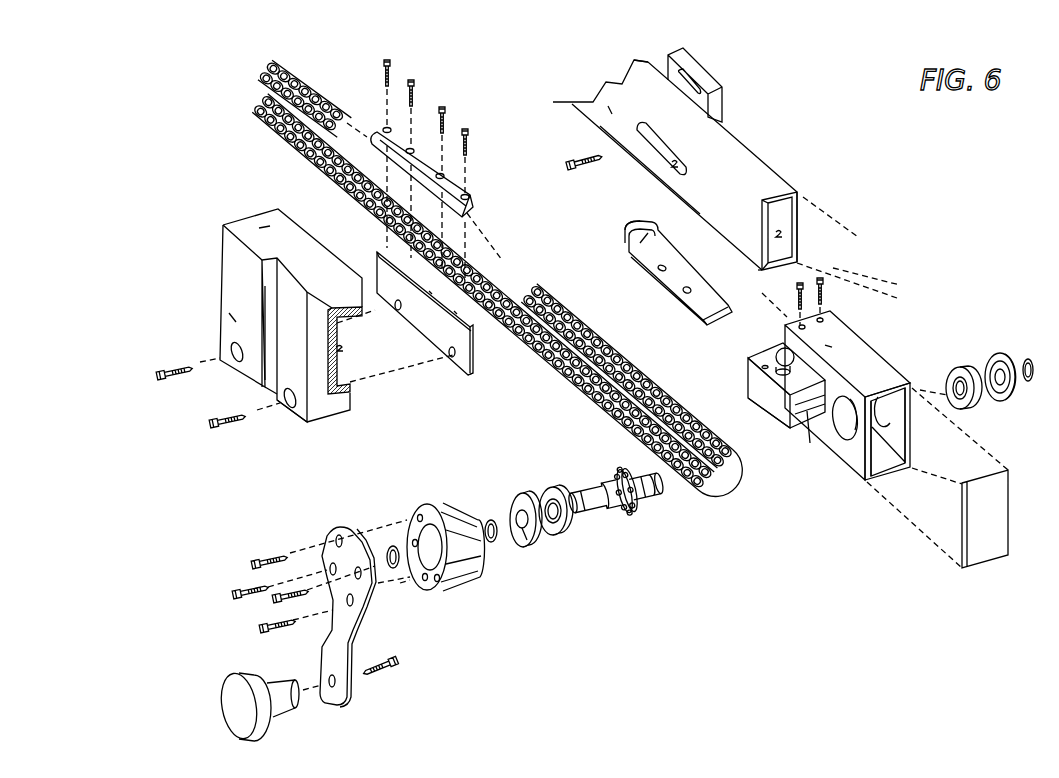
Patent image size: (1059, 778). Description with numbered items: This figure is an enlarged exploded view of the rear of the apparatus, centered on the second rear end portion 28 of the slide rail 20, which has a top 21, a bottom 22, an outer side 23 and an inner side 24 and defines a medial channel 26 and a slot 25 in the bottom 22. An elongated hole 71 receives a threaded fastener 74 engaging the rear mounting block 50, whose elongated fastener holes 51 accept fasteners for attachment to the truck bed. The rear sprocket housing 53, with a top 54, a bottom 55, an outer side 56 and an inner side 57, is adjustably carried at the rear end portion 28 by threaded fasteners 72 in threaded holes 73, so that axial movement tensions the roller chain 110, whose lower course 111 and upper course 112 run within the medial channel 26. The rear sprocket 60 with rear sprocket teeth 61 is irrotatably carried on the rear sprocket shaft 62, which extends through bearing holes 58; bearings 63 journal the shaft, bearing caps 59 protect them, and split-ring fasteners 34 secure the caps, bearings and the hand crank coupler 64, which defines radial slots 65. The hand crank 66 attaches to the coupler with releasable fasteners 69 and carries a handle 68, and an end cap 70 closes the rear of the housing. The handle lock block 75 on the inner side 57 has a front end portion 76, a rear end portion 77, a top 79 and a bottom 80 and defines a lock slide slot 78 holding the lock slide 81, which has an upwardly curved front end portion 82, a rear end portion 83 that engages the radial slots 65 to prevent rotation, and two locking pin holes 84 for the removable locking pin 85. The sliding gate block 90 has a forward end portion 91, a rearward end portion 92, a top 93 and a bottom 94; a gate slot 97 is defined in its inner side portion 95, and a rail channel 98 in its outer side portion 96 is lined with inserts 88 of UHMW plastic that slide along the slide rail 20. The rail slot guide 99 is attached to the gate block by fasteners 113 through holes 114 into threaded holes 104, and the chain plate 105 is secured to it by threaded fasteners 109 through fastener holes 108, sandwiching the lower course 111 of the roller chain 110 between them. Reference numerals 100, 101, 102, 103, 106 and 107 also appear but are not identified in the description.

The slide rail 20 is at (740, 137).
The top 21 is at (747, 158).
The bottom 22 is at (762, 270).
The outer side 23 is at (800, 220).
The inner side 24 is at (612, 110).
The slot 25 is at (772, 258).
The medial channel 26 is at (763, 202).
The second rear end portion 28 is at (781, 190).
The split-ring fasteners 34 is at (1029, 360).
The rear mounting block 50 is at (650, 62).
The elongated fastener holes 51 is at (697, 87).
The rear sprocket housing 53 is at (897, 360).
The top 54 is at (828, 345).
The bottom 55 is at (907, 468).
The outer side 56 is at (913, 387).
The inner side 57 is at (850, 452).
The bearing holes 58 is at (837, 397).
The bearing caps 59 is at (1010, 402).
The rear sprocket 60 is at (628, 510).
The rear sprocket teeth 61 is at (620, 465).
The rear sprocket shaft 62 is at (660, 490).
The bearings 63 is at (955, 368).
The hand crank coupler 64 is at (453, 578).
The radial slots 65 is at (483, 482).
The hand crank 66 is at (348, 550).
The handle 68 is at (230, 708).
The releasable fasteners 69 is at (263, 557).
The end caps 70 is at (975, 530).
The elongated hole 71 is at (672, 162).
The threaded fasteners 72 is at (823, 280).
The threaded holes 73 is at (832, 310).
The threaded fastener 74 is at (578, 167).
The handle lock block 75 is at (773, 440).
The front end portion 76 is at (763, 367).
The rear end portion 77 is at (776, 421).
The lock slide slot 78 is at (807, 415).
The top 79 is at (758, 368).
The bottom 80 is at (797, 403).
The lock slide 81 is at (646, 282).
The upwardly curved front end portion 82 is at (627, 243).
The rear end portion 83 is at (706, 323).
The locking pin holes 84 is at (687, 288).
The removable locking pin 85 is at (783, 357).
The inserts 88 is at (328, 335).
The sliding gate block 90 is at (218, 224).
The forward end portion 91 is at (221, 268).
The rearward end portion 92 is at (318, 375).
The top 93 is at (262, 228).
The bottom 94 is at (320, 423).
The inner side portion 95 is at (232, 318).
The outer side portion 96 is at (340, 268).
The gate slot 97 is at (266, 283).
The rail channel 98 is at (342, 350).
The rail slot guide 99 is at (479, 378).
The plate 100 is at (377, 268).
The plate end 101 is at (477, 358).
The plate edge 102 is at (470, 332).
The hole 103 is at (398, 312).
The threaded holes 104 is at (452, 360).
The chain plate 105 is at (467, 197).
The bar surface 106 is at (380, 132).
The bar end 107 is at (475, 213).
The fastener holes 108 is at (388, 127).
The threaded fasteners 109 is at (412, 82).
The roller chain 110 is at (268, 72).
The lower course 111 is at (604, 408).
The upper course 112 is at (566, 315).
The fasteners 113 is at (177, 380).
The holes 114 is at (237, 348).